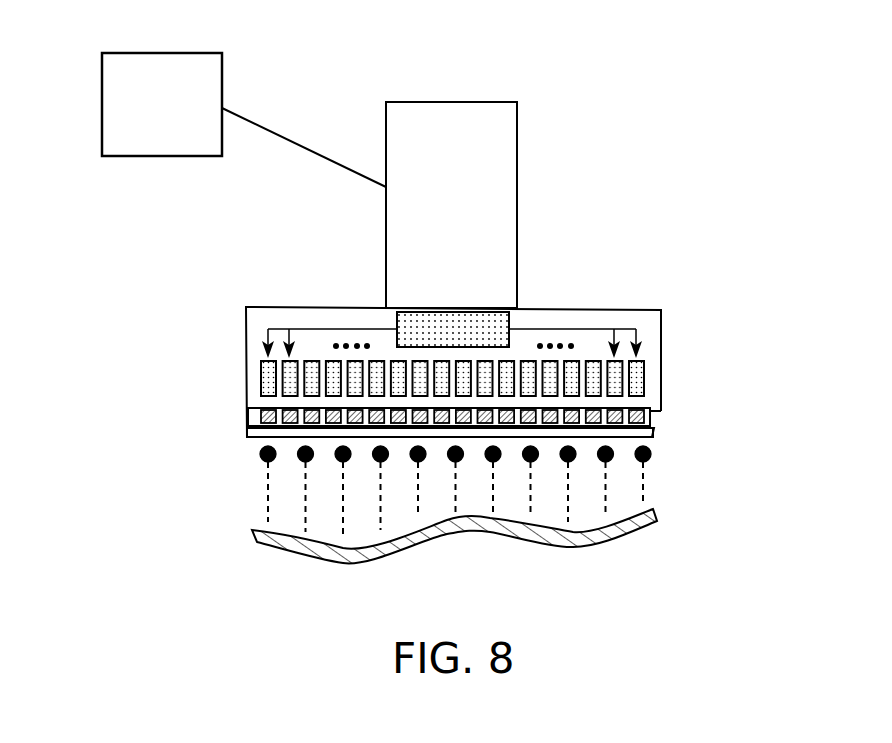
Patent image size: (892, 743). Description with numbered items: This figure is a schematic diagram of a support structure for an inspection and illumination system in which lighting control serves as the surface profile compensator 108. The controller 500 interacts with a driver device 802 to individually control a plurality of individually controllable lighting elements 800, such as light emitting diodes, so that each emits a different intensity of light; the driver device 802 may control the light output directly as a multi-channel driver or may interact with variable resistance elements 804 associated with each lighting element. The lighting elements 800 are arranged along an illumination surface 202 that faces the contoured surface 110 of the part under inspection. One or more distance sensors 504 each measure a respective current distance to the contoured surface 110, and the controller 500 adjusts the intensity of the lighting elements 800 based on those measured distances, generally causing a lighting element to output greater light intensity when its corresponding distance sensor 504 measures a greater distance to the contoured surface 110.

The controller 500 is at (102, 102).
The surface profile compensator 108 is at (248, 66).
The driver device 802 is at (497, 330).
The variable resistance elements 804 is at (262, 375).
The individually controllable lighting elements 800 is at (262, 416).
The illumination surface 202 is at (652, 436).
The distance sensors 504 is at (260, 455).
The contoured surface 110 is at (640, 527).